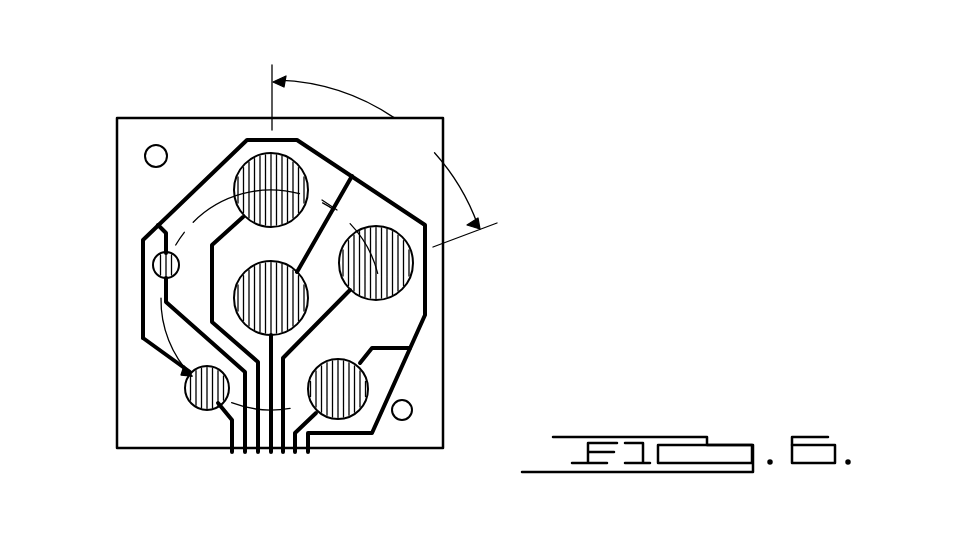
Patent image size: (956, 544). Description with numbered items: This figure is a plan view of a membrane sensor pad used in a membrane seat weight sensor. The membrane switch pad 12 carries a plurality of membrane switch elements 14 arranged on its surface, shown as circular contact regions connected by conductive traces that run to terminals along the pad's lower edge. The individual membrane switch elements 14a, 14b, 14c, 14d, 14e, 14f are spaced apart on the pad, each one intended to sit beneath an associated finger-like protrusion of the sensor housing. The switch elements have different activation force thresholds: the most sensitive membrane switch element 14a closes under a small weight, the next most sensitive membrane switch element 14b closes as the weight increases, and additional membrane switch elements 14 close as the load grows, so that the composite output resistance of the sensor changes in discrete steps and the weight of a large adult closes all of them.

The membrane switch pad 12 is at (446, 346).
The membrane switch element 14 is at (494, 138).
The most sensitive membrane switch element 14a is at (417, 271).
The next most sensitive membrane switch element 14b is at (242, 154).
The membrane switch element 14c is at (151, 266).
The membrane switch element 14d is at (200, 411).
The membrane switch element 14e is at (341, 426).
The membrane switch element 14f is at (379, 319).